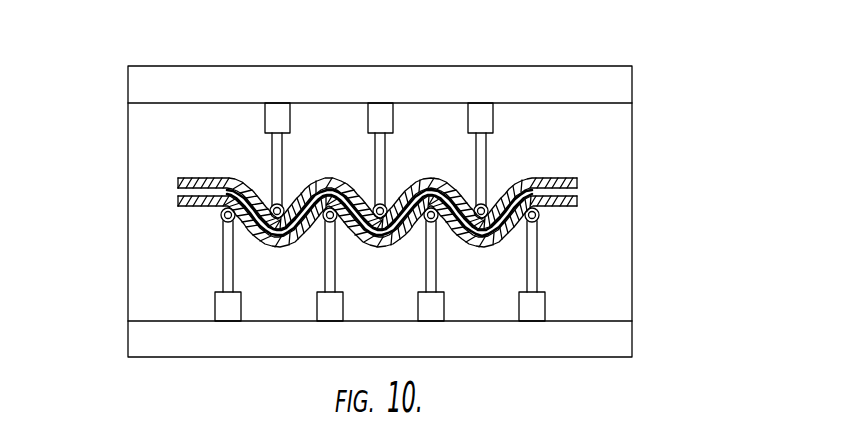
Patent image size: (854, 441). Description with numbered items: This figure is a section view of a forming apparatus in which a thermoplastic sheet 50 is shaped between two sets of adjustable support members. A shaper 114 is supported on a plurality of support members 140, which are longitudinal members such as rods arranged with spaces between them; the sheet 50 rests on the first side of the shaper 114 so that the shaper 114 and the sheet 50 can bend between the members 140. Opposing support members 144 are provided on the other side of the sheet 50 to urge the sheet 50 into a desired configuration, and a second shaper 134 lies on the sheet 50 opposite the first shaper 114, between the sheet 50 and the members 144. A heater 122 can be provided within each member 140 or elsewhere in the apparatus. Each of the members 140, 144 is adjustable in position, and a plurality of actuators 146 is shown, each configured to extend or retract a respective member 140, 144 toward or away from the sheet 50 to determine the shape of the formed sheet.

The thermoplastic sheet 50 is at (378, 162).
The shaper 114 is at (578, 197).
The heater 122 is at (358, 194).
The second shaper 134 is at (578, 180).
The support members 140 is at (221, 213).
The opposing support members 144 is at (271, 205).
The actuators 146 is at (280, 103).